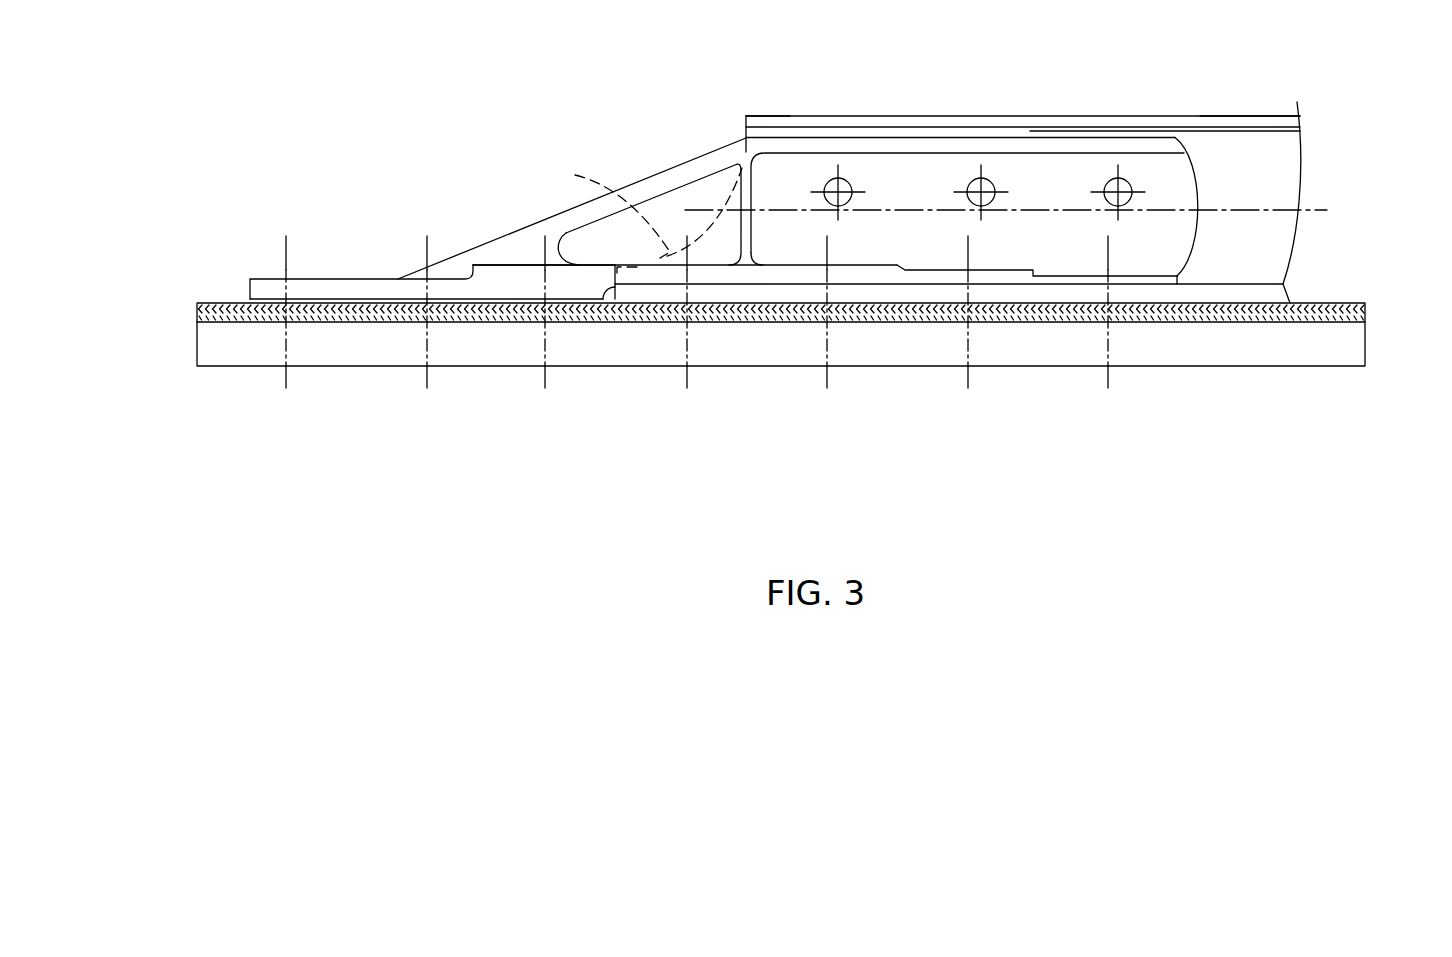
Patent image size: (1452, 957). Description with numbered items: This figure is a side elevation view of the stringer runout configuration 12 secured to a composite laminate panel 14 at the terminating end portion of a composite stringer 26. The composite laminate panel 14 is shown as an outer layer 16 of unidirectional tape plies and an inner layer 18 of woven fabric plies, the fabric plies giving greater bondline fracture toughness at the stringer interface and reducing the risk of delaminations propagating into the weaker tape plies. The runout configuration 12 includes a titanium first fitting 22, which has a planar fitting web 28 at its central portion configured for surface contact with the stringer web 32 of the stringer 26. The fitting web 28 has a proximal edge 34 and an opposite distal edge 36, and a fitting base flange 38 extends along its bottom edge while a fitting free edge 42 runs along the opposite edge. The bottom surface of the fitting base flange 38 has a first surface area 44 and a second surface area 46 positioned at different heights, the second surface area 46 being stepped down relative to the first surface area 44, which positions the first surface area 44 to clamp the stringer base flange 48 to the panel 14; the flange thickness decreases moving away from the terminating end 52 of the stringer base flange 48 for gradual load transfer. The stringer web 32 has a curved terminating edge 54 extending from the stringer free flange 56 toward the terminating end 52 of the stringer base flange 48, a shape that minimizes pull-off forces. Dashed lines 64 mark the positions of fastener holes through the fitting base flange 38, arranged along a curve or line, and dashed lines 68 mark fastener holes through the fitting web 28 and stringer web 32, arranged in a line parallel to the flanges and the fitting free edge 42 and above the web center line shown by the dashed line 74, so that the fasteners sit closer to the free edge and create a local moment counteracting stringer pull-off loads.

The stringer runout configuration 12 is at (999, 211).
The composite laminate panel 14 is at (221, 284).
The outer layer 16 is at (1297, 366).
The inner layer 18 is at (1347, 303).
The first fitting 22 is at (1026, 130).
The stringer 26 is at (1262, 100).
The fitting web 28 is at (918, 172).
The stringer web 32 is at (1283, 147).
The proximal edge 34 is at (1197, 222).
The distal edge 36 is at (515, 226).
The fitting base flange 38 is at (863, 264).
The fitting free edge 42 is at (1094, 130).
The first surface area 44 is at (1050, 284).
The second surface area 46 is at (503, 300).
The stringer base flange 48 is at (711, 284).
The terminating end 52 is at (600, 303).
The terminating edge 54 is at (641, 217).
The stringer free flange 56 is at (773, 115).
The fastener holes 64 is at (286, 388).
The fastener holes 68 is at (850, 179).
The center line 74 is at (1318, 210).